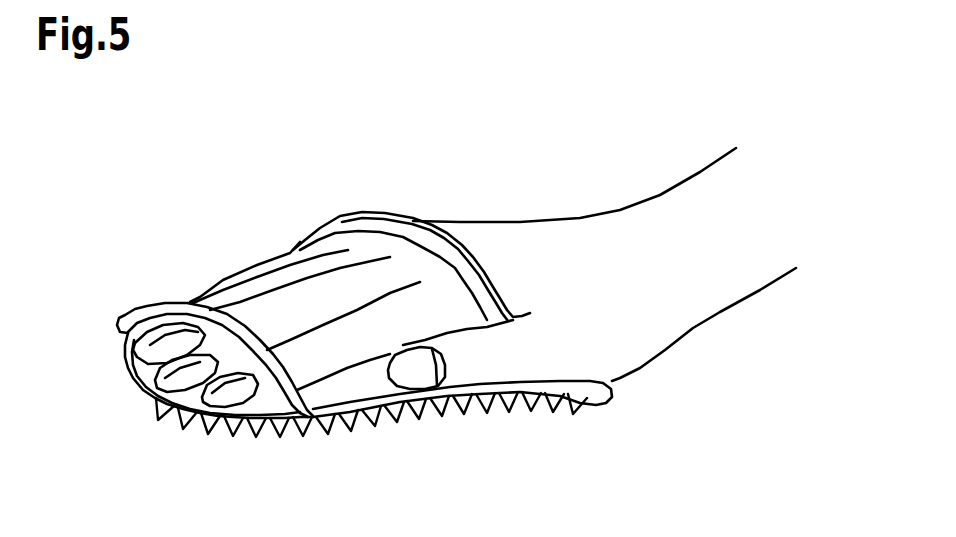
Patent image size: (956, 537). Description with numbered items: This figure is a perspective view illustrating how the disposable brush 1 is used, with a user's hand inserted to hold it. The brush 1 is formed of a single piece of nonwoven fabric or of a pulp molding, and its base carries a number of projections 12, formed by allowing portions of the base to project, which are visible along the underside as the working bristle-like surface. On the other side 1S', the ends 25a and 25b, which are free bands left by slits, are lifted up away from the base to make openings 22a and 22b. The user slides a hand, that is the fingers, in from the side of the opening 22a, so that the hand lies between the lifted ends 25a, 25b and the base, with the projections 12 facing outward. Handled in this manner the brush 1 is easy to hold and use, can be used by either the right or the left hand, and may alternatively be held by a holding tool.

The disposable brush 1 is at (378, 98).
The end 25a is at (411, 218).
The opening 22a is at (405, 239).
The end 25b is at (206, 316).
The opening 22b is at (218, 309).
The other side 1S' is at (185, 373).
The projections 12 is at (371, 451).